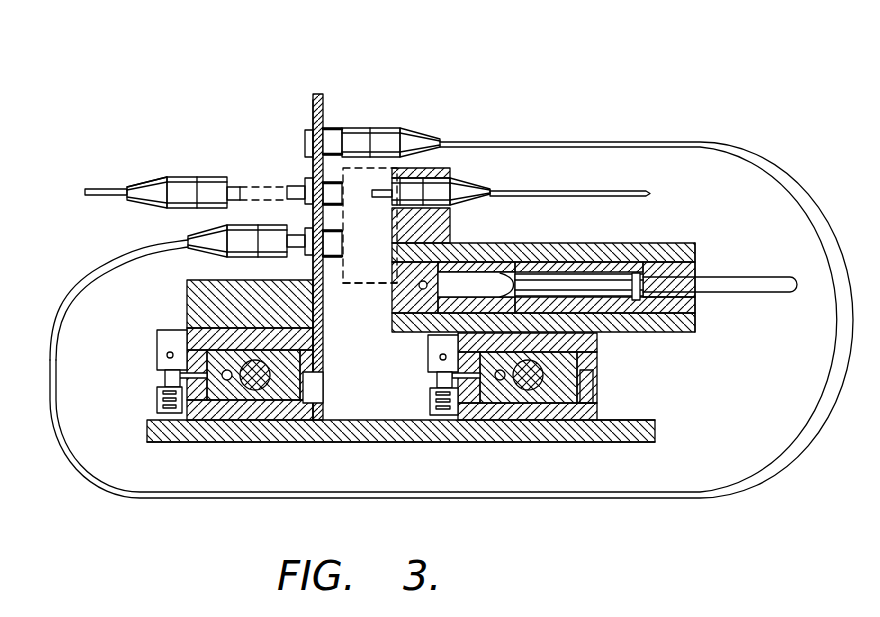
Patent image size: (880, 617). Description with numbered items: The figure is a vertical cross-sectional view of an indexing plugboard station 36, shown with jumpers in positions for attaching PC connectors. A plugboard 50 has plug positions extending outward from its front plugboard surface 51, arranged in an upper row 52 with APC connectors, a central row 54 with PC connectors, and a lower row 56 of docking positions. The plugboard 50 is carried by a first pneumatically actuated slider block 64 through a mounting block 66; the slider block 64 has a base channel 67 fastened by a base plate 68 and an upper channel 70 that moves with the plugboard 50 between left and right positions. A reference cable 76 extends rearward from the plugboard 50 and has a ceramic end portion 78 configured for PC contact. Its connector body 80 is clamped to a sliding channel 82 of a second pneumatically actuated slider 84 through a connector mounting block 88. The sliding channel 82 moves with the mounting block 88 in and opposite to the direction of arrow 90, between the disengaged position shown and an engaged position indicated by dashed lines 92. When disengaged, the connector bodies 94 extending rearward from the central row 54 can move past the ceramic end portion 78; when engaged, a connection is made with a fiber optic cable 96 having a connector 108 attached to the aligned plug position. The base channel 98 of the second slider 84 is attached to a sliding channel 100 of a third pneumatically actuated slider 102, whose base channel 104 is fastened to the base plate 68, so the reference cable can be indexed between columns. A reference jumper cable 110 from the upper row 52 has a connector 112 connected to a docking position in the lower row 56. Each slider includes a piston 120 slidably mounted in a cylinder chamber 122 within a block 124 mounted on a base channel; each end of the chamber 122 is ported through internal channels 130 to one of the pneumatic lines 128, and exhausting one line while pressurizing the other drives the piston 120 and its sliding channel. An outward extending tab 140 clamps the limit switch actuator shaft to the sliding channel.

The indexing plugboard station 36 is at (133, 62).
The plugboard 50 is at (318, 94).
The front plugboard surface 51 is at (317, 110).
The upper row of plug positions 52 is at (290, 145).
The central row of plug positions 54 is at (290, 170).
The lower row of plug positions 56 is at (290, 221).
The first pneumatically actuated slider block 64 is at (180, 342).
The mounting block 66 is at (185, 295).
The base channel 67 is at (313, 443).
The base plate 68 is at (147, 425).
The upper channel 70 is at (332, 350).
The reference cable 76 is at (617, 190).
The ceramic end portion 78 is at (379, 188).
The connector body 80 is at (478, 182).
The sliding channel 82 is at (495, 296).
The second pneumatically actuated slider 84 is at (702, 262).
The connector mounting block 88 is at (390, 222).
The arrow 90 is at (528, 550).
The dashed lines 92 is at (350, 284).
The connector bodies 94 is at (333, 182).
The fiber optic cable 96 is at (107, 190).
The base channel 98 is at (697, 328).
The sliding channel 100 is at (597, 348).
The third pneumatically actuated slider 102 is at (603, 364).
The base channel 104 is at (655, 421).
The connector 108 is at (142, 177).
The reference jumper cable 110 is at (708, 143).
The connector 112 is at (230, 258).
The piston 120 is at (515, 243).
The cylinder chamber 122 is at (505, 275).
The block 124 is at (697, 303).
The pneumatic lines 128 is at (747, 278).
The internal channels 130 is at (668, 268).
The outward extending tab 140 is at (157, 353).